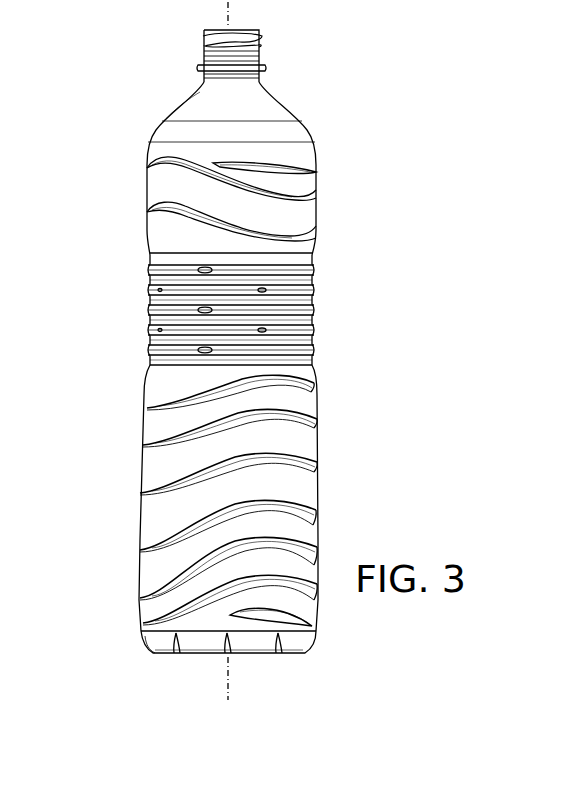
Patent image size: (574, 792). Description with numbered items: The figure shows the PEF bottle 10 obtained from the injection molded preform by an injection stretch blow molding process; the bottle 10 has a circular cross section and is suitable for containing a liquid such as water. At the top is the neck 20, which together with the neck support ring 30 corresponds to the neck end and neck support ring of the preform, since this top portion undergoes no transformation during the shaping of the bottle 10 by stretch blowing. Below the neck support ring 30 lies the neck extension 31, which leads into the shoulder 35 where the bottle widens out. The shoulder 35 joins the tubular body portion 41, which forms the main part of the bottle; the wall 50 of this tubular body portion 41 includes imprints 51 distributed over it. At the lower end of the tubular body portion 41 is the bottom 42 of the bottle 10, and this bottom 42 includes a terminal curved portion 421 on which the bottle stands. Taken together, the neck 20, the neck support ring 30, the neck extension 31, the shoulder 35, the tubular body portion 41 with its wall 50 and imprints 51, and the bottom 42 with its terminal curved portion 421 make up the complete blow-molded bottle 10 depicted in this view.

The bottle 10 is at (336, 326).
The neck 20 is at (273, 47).
The neck support ring 30 is at (263, 68).
The neck extension 31 is at (202, 75).
The shoulder 35 is at (162, 124).
The tubular body portion 41 is at (145, 142).
The bottom 42 is at (140, 652).
The terminal curved portion 421 is at (148, 653).
The wall 50 is at (317, 404).
The imprints 51 is at (315, 216).